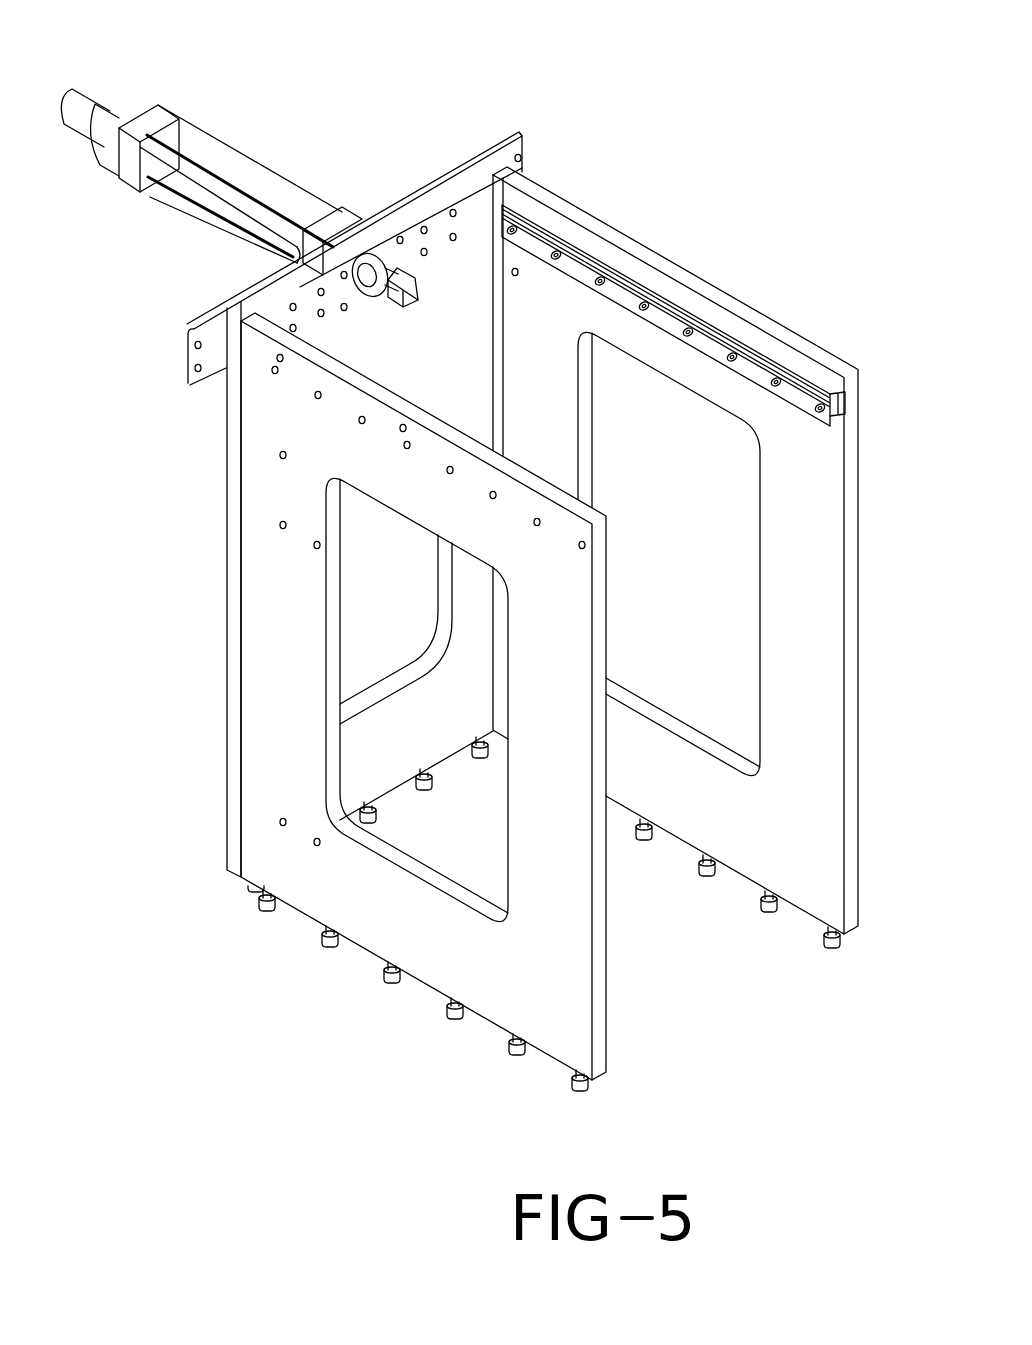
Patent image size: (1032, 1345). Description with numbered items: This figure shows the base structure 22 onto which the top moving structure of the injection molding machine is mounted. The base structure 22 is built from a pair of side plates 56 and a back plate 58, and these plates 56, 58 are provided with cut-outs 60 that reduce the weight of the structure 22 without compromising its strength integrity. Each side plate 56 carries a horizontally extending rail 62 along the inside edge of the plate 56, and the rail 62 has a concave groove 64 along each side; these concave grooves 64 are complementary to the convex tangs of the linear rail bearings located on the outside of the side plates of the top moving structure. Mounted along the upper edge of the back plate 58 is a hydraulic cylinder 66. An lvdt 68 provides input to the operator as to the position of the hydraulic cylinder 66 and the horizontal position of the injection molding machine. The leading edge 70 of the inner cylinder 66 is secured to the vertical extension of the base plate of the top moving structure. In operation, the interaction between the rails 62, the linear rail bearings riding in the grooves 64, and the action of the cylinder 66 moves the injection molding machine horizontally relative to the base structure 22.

The base structure 22 is at (667, 177).
The side plates 56 is at (818, 612).
The back plate 58 is at (389, 751).
The cut-outs 60 is at (581, 404).
The rail 62 is at (843, 400).
The concave groove 64 is at (837, 418).
The hydraulic cylinder 66 is at (225, 170).
The lvdt 68 is at (92, 103).
The leading edge 70 is at (415, 290).